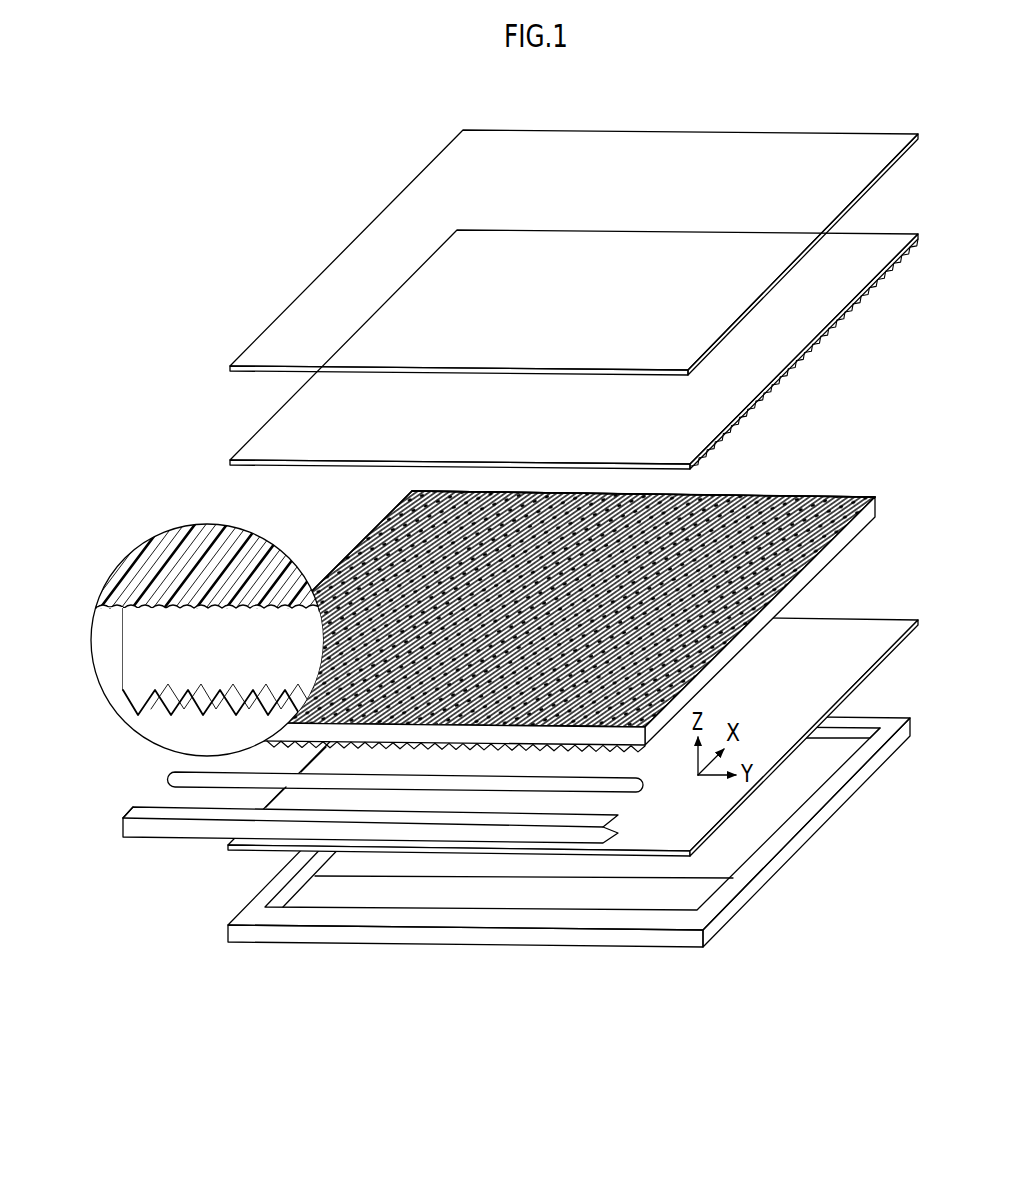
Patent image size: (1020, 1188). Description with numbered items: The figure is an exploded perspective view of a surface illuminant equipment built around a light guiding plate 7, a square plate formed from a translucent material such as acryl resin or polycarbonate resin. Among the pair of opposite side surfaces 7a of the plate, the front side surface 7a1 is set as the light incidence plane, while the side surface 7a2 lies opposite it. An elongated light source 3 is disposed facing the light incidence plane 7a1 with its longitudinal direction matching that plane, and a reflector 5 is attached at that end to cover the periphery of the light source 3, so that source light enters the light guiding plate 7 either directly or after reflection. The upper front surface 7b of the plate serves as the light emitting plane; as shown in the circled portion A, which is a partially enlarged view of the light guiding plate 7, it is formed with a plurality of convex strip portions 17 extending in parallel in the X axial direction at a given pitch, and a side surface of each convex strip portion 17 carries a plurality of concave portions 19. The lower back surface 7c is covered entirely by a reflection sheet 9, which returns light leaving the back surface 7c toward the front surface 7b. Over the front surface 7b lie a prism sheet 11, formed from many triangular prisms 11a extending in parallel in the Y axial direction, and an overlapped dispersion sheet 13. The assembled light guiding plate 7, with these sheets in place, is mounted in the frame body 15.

The dispersion sheet 13 is at (851, 146).
The prism sheet 11 is at (582, 349).
The prisms 11a is at (916, 285).
The light guiding plate 7 is at (568, 606).
The front surface 7b is at (833, 495).
The side surface 7a2 is at (879, 500).
The back surface 7c is at (719, 666).
The light incidence plane 7a1 is at (628, 750).
The light incident end face 7a is at (137, 628).
The reflection sheet 9 is at (880, 632).
The frame body 15 is at (453, 929).
The reflector 5 is at (164, 828).
The light source 3 is at (178, 780).
The convex strip portions 17 is at (153, 595).
The concave portions 19 is at (193, 560).
The enlarged detail region A is at (222, 617).